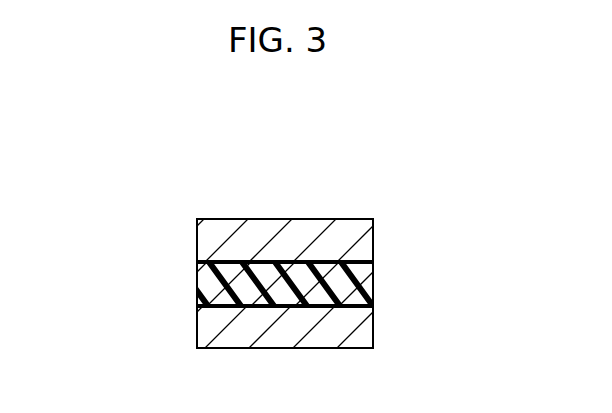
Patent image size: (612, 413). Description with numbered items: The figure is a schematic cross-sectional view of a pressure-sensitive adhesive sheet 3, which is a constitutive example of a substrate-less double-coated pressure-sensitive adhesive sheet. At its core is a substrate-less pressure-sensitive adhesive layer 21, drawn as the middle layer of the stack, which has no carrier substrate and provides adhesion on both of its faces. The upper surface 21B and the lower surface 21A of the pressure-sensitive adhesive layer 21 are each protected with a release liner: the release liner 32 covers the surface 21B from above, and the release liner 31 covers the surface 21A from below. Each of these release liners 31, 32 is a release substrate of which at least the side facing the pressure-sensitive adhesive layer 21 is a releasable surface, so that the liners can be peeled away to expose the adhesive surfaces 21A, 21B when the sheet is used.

The pressure-sensitive adhesive sheet 3 is at (342, 167).
The release liner 32 is at (373, 240).
The pressure-sensitive adhesive layer 21 is at (373, 287).
The release liner 31 is at (373, 332).
The surface of pressure-sensitive adhesive layer 21B is at (212, 261).
The surface of pressure-sensitive adhesive layer 21A is at (226, 306).